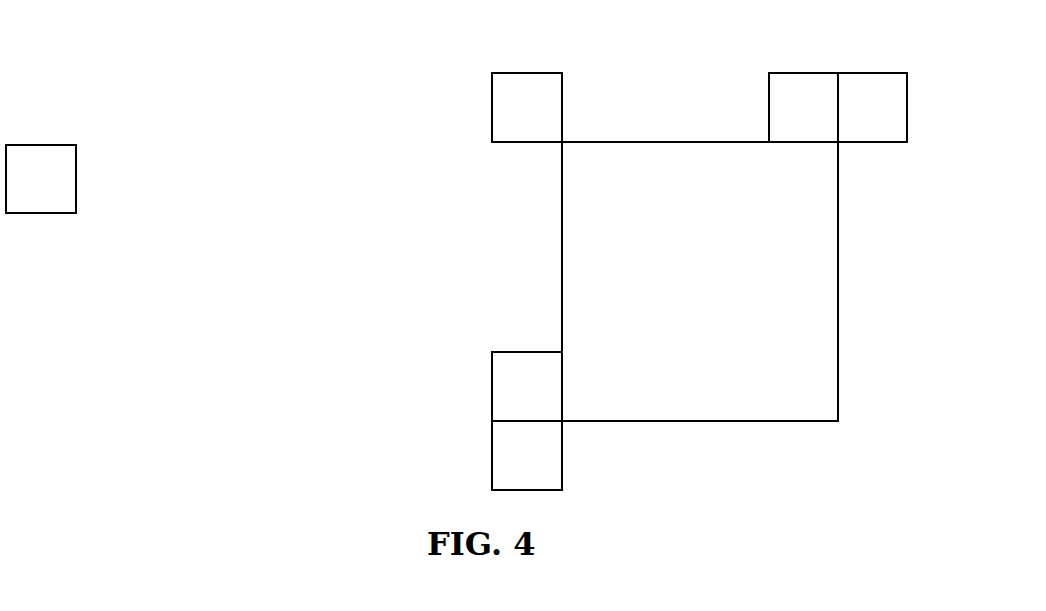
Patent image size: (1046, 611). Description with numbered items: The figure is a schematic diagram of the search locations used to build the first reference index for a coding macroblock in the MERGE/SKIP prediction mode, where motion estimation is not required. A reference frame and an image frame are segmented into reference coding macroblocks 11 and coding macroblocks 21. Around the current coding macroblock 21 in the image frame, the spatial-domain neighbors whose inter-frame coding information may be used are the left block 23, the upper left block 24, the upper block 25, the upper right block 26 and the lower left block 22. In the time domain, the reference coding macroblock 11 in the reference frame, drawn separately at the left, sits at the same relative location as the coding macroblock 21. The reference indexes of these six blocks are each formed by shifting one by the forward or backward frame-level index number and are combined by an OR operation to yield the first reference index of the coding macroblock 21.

The reference coding macroblock 11 is at (76, 212).
The coding macroblock 21 is at (838, 421).
The lower left block 22 is at (492, 460).
The left block 23 is at (492, 394).
The upper left block 24 is at (492, 97).
The upper block 25 is at (793, 73).
The upper right block 26 is at (870, 73).